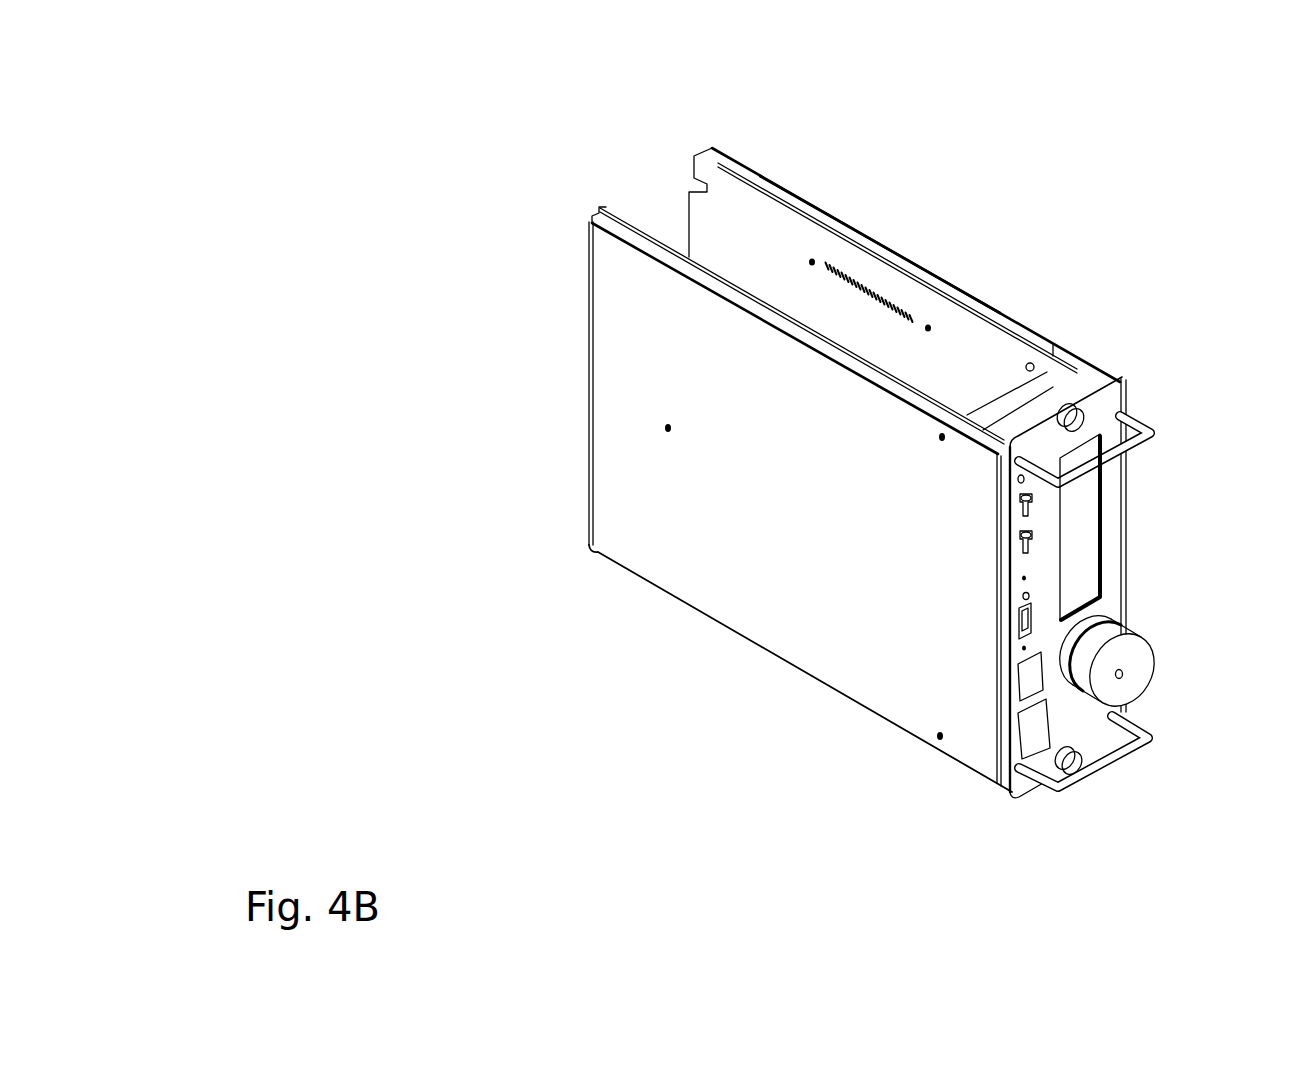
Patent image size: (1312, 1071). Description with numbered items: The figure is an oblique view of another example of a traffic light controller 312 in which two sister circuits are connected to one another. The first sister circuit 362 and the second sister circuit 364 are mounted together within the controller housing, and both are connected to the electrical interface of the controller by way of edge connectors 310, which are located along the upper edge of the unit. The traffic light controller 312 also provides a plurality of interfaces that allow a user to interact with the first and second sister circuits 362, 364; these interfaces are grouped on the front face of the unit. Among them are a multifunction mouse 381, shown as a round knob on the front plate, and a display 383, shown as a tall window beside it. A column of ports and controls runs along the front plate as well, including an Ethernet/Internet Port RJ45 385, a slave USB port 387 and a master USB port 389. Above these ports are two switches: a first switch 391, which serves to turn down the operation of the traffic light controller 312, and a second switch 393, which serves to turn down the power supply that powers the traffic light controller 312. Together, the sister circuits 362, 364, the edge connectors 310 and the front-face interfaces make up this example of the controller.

The edge connectors 310 is at (600, 208).
The traffic light controller 312 is at (1168, 243).
The first sister circuit 362 is at (844, 221).
The second sister circuit 364 is at (875, 372).
The multifunction mouse 381 is at (1137, 659).
The display 383 is at (1085, 541).
The Ethernet/Internet Port RJ45 385 is at (1010, 757).
The slave USB port 387 is at (1010, 690).
The master USB port 389 is at (1015, 632).
The first switch 391 is at (1018, 552).
The second switch 393 is at (1018, 514).